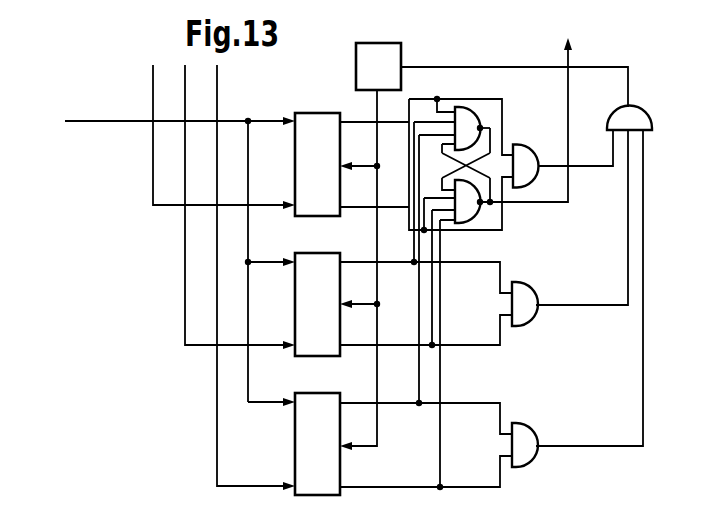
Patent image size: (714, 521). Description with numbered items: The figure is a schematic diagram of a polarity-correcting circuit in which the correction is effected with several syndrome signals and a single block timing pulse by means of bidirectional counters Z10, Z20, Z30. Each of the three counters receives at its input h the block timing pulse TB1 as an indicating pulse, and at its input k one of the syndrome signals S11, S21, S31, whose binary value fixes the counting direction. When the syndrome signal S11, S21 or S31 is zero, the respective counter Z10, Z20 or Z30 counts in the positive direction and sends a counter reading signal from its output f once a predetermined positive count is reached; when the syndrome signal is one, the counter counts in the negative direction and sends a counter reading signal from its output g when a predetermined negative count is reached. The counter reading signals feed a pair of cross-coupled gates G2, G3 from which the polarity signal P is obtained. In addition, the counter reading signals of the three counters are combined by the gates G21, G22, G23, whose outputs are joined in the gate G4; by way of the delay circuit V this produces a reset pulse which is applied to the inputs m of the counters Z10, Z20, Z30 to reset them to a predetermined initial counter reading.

The block timing pulse TB1 is at (164, 255).
The syndrome signal S11 is at (216, 134).
The syndrome signal S21 is at (234, 204).
The syndrome signal S31 is at (251, 275).
The counter Z10 is at (319, 160).
The counter Z20 is at (319, 300).
The counter Z30 is at (319, 441).
The delay circuit V is at (484, 246).
The polarity signal P is at (534, 115).
The first gate of flip-flop G2 is at (461, 109).
The second gate of flip-flop G3 is at (461, 222).
The gate G21 is at (531, 179).
The gate G22 is at (540, 282).
The gate G23 is at (540, 422).
The gate G4 is at (645, 122).